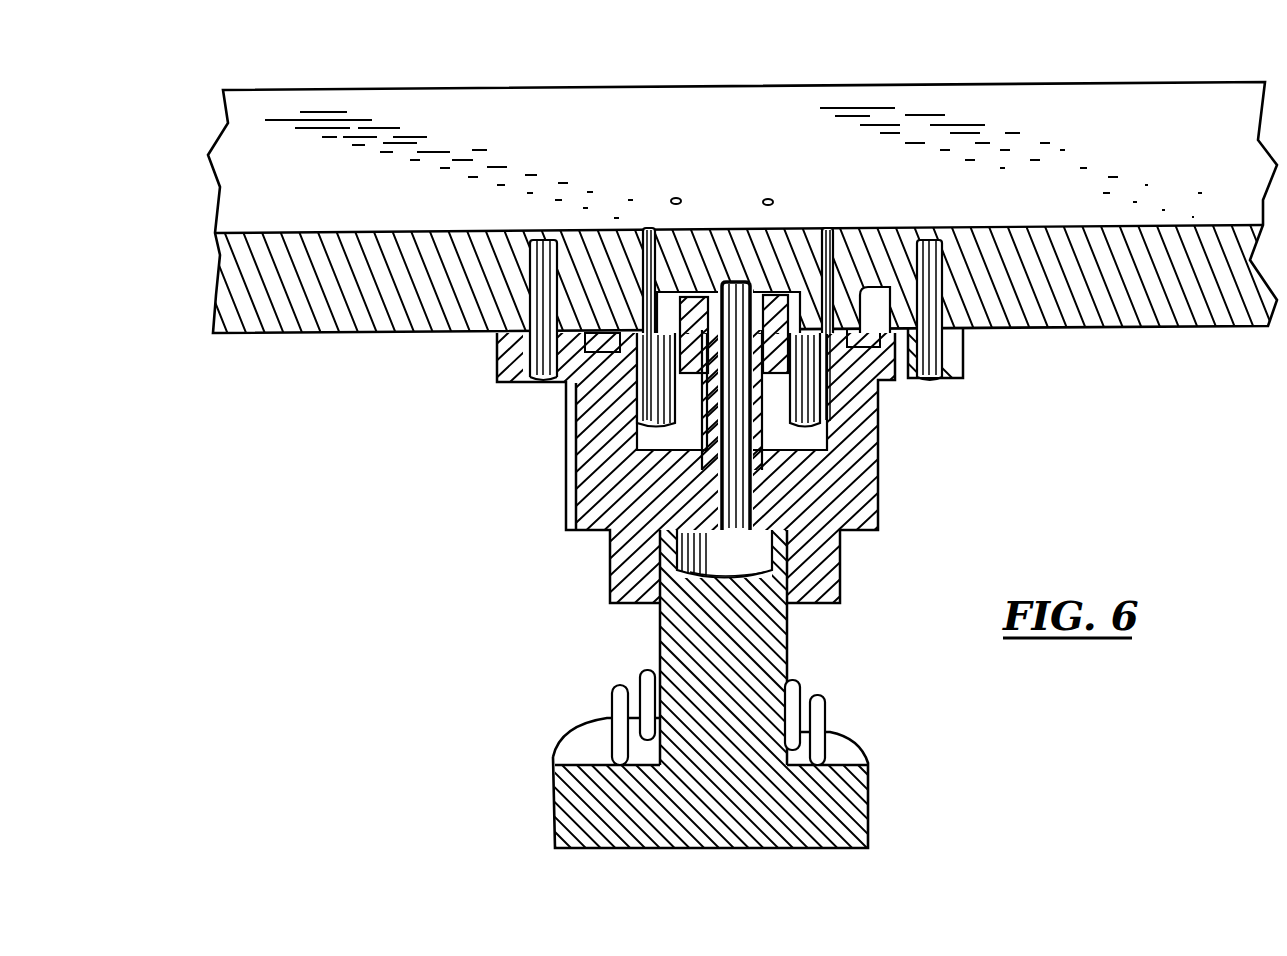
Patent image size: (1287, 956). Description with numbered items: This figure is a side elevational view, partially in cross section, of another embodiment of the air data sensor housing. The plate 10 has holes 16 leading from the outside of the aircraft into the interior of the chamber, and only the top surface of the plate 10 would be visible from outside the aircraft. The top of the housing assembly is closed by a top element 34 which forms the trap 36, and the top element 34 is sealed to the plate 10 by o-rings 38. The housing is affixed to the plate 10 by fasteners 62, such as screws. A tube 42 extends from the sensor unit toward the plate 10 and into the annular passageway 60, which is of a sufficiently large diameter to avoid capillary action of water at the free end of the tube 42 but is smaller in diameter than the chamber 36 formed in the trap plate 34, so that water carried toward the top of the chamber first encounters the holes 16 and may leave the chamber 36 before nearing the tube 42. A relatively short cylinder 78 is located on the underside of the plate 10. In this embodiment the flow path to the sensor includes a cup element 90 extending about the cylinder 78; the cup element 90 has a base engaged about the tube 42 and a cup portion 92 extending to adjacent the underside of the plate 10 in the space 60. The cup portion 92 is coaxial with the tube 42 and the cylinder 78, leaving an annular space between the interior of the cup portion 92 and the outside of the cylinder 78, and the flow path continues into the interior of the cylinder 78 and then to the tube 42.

The plate 10 is at (377, 90).
The holes 16 is at (676, 197).
The top element 34 is at (878, 517).
The trap 36 is at (800, 442).
The o-rings 38 is at (889, 290).
The tube 42 is at (740, 410).
The annular passageway 60 is at (812, 286).
The fasteners 62 is at (965, 337).
The cylinder 78 is at (790, 335).
The cup element 90 is at (693, 413).
The cup portion 92 is at (706, 290).